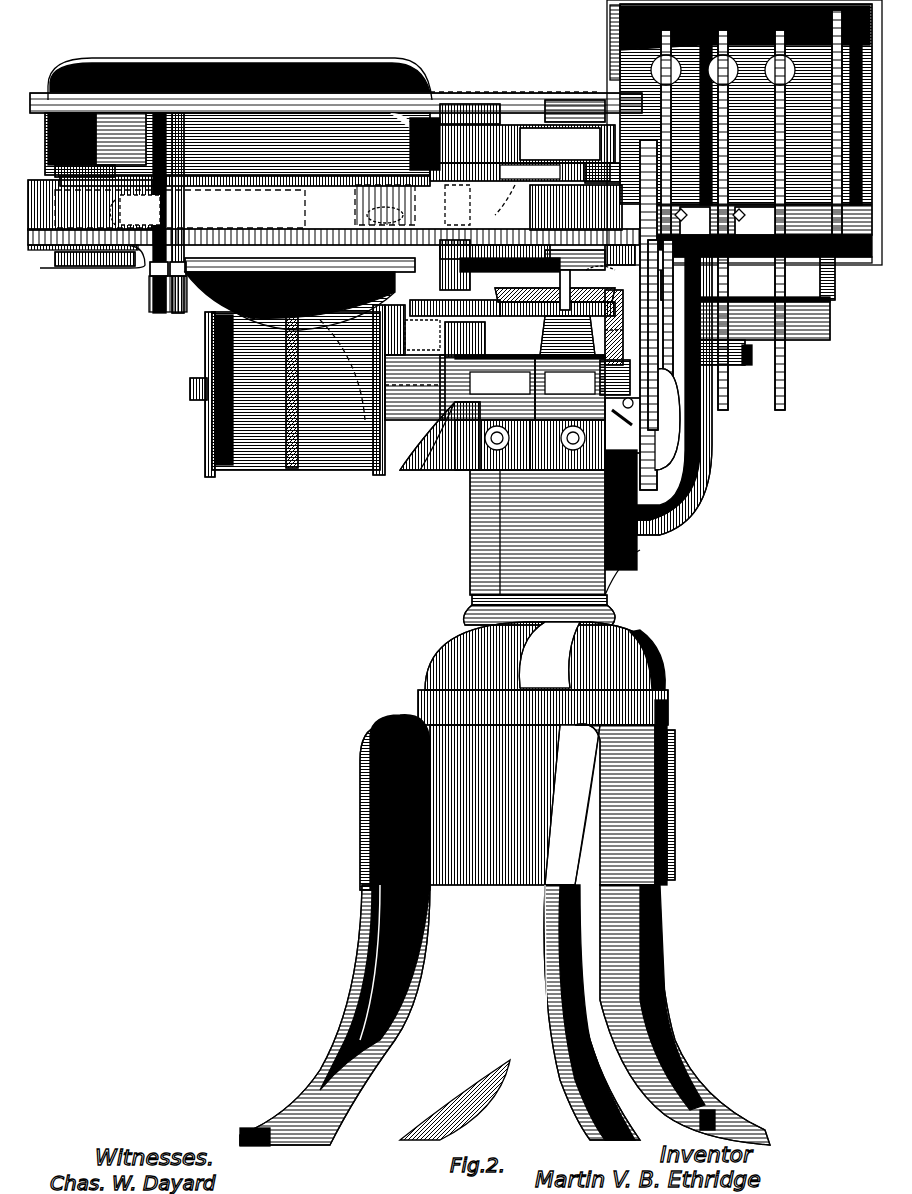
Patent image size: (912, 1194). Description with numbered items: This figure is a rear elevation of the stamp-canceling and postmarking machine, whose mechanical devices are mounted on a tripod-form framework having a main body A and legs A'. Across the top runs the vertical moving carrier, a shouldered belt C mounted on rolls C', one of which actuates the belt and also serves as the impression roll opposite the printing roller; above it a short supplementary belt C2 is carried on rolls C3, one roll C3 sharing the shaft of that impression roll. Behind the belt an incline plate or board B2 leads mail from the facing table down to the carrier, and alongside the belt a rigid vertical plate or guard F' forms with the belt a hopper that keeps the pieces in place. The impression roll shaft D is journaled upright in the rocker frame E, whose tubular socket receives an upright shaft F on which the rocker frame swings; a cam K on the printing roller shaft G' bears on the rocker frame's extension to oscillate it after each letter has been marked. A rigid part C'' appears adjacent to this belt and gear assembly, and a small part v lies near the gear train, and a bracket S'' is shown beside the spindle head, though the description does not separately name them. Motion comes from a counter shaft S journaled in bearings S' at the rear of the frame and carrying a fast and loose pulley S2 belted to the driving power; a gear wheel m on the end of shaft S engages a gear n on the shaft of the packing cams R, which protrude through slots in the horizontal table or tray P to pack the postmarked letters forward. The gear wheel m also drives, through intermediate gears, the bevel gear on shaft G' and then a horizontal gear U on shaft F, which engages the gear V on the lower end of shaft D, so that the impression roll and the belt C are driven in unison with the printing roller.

The vertical longitudinal plate or guard F' is at (240, 68).
The incline plate or board B2 is at (237, 144).
The horizontal table or tray P is at (323, 213).
The belt rolls C' is at (87, 206).
The belt C is at (338, 207).
The supplementary belt C2 is at (512, 144).
The supplementary belt rolls C3 is at (528, 112).
The rocker frame E is at (522, 185).
The impression roll shaft D is at (520, 172).
The gear C'' is at (602, 171).
The upright shaft F is at (452, 339).
The horizontal gear U is at (455, 319).
The gear V is at (555, 312).
The pinion v is at (608, 327).
The cam K is at (620, 255).
The printing roller shaft G' is at (600, 276).
The gear n is at (617, 332).
The gear wheel m is at (624, 425).
The cams R is at (746, 210).
The fast and loose pulley S2 is at (287, 399).
The counter shaft S is at (487, 412).
The bearings S' is at (515, 423).
The bracket S'' is at (435, 436).
The main body A is at (517, 742).
The legs A' is at (505, 1015).